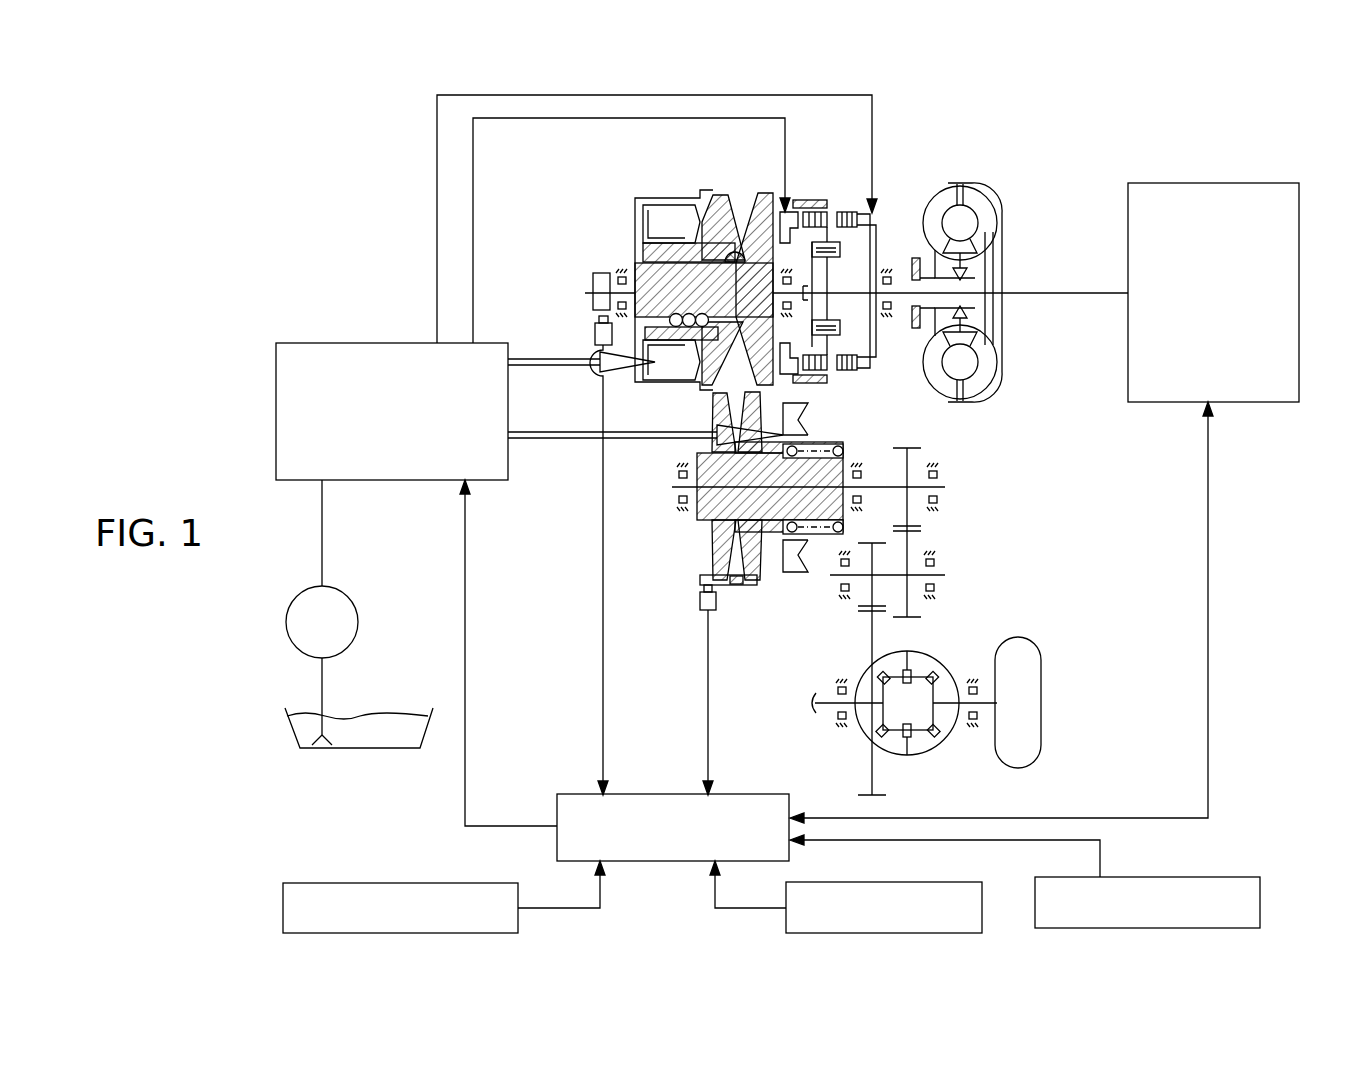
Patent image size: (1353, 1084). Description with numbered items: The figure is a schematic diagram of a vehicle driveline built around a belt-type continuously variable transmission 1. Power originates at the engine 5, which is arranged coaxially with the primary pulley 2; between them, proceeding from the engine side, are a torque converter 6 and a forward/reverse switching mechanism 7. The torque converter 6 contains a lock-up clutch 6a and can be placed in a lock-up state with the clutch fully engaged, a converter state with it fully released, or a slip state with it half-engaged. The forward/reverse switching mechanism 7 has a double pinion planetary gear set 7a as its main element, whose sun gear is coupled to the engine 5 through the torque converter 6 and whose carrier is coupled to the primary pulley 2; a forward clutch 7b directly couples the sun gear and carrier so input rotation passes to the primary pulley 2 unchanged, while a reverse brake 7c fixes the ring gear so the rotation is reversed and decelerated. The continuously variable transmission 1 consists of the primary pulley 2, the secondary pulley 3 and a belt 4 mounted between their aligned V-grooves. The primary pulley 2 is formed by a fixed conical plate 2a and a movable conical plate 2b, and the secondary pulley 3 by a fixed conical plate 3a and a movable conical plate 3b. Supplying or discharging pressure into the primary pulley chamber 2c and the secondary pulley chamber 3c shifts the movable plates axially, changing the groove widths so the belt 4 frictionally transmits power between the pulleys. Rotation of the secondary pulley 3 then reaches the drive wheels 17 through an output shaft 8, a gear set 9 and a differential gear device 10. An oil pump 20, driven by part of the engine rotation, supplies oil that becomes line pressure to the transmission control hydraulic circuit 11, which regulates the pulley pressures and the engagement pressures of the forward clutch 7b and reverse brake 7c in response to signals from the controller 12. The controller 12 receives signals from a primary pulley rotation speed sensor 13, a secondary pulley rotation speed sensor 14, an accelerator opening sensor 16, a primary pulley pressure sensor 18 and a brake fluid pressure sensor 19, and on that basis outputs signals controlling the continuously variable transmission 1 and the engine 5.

The continuously variable transmission 1 is at (644, 184).
The primary pulley 2 is at (750, 182).
The fixed conical plate 2a is at (765, 192).
The movable conical plate 2b is at (714, 194).
The primary pulley chamber 2c is at (660, 227).
The secondary pulley 3 is at (808, 600).
The fixed conical plate 3a is at (712, 550).
The movable conical plate 3b is at (757, 582).
The secondary pulley chamber 3c is at (774, 572).
The belt 4 is at (738, 252).
The engine 5 is at (1215, 182).
The torque converter 6 is at (957, 168).
The lock-up clutch 6a is at (994, 275).
The forward/reverse switching mechanism 7 is at (803, 177).
The double pinion planetary gear set 7a is at (836, 216).
The forward clutch 7b is at (848, 211).
The reverse brake 7c is at (816, 210).
The output shaft 8 is at (886, 487).
The gear set 9 is at (965, 515).
The differential gear device 10 is at (958, 645).
The transmission control hydraulic circuit 11 is at (372, 343).
The controller 12 is at (655, 861).
The primary pulley rotation speed sensor 13 is at (594, 330).
The secondary pulley rotation speed sensor 14 is at (710, 612).
The accelerator opening sensor 16 is at (405, 883).
The drive wheels 17 is at (1027, 683).
The primary pulley pressure sensor 18 is at (1255, 895).
The brake fluid pressure sensor 19 is at (786, 922).
The oil pump 20 is at (357, 628).